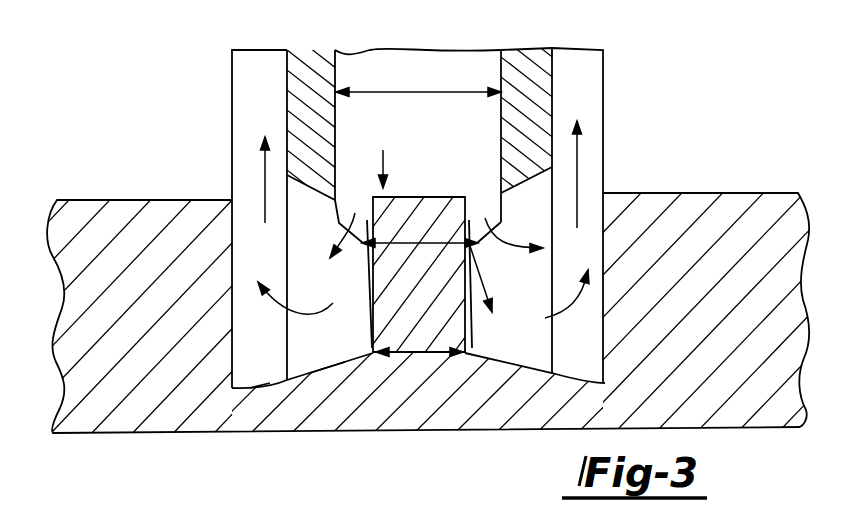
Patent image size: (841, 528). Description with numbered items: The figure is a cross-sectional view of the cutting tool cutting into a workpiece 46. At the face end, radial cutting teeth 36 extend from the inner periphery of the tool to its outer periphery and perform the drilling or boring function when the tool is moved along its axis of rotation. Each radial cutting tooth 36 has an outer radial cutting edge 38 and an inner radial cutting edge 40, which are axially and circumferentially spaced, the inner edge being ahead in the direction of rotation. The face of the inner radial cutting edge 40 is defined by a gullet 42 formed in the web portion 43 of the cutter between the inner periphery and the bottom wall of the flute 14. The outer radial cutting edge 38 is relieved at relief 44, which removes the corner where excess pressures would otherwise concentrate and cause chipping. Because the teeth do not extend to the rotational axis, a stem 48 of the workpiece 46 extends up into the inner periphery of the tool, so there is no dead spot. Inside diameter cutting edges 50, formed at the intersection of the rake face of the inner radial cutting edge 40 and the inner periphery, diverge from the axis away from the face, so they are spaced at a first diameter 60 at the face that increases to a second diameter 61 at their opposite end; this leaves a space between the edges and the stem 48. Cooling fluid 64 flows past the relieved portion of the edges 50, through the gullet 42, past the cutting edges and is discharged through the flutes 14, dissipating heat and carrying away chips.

The flute 14 is at (248, 81).
The web portion 43 is at (303, 60).
The workpiece 46 is at (115, 218).
The inside diameter cutting edge 50 is at (370, 292).
The cooling fluid 64 is at (450, 187).
The gullet 42 is at (320, 223).
The stem 48 is at (395, 210).
The second diameter 61 is at (440, 208).
The relief 44 is at (237, 390).
The outer radial cutting edge 38 is at (260, 390).
The radial cutting tooth 36 is at (283, 385).
The inner radial cutting edge 40 is at (327, 370).
The first diameter 60 is at (420, 356).